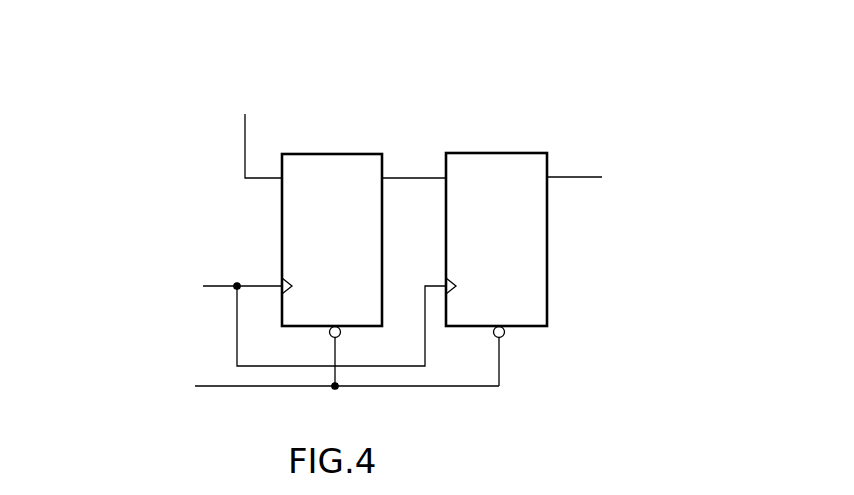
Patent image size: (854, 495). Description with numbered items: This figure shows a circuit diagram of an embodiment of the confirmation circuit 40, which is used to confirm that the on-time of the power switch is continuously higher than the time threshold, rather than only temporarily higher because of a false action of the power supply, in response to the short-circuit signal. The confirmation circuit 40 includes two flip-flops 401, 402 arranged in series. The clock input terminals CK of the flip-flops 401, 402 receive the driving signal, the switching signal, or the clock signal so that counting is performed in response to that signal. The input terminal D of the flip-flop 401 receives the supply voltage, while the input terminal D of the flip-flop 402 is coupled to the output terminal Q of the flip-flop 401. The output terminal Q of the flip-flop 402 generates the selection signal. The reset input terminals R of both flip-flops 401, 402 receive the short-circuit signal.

The confirmation circuit 40 is at (767, 49).
The flip-flop 401 is at (323, 154).
The flip-flop 402 is at (498, 153).